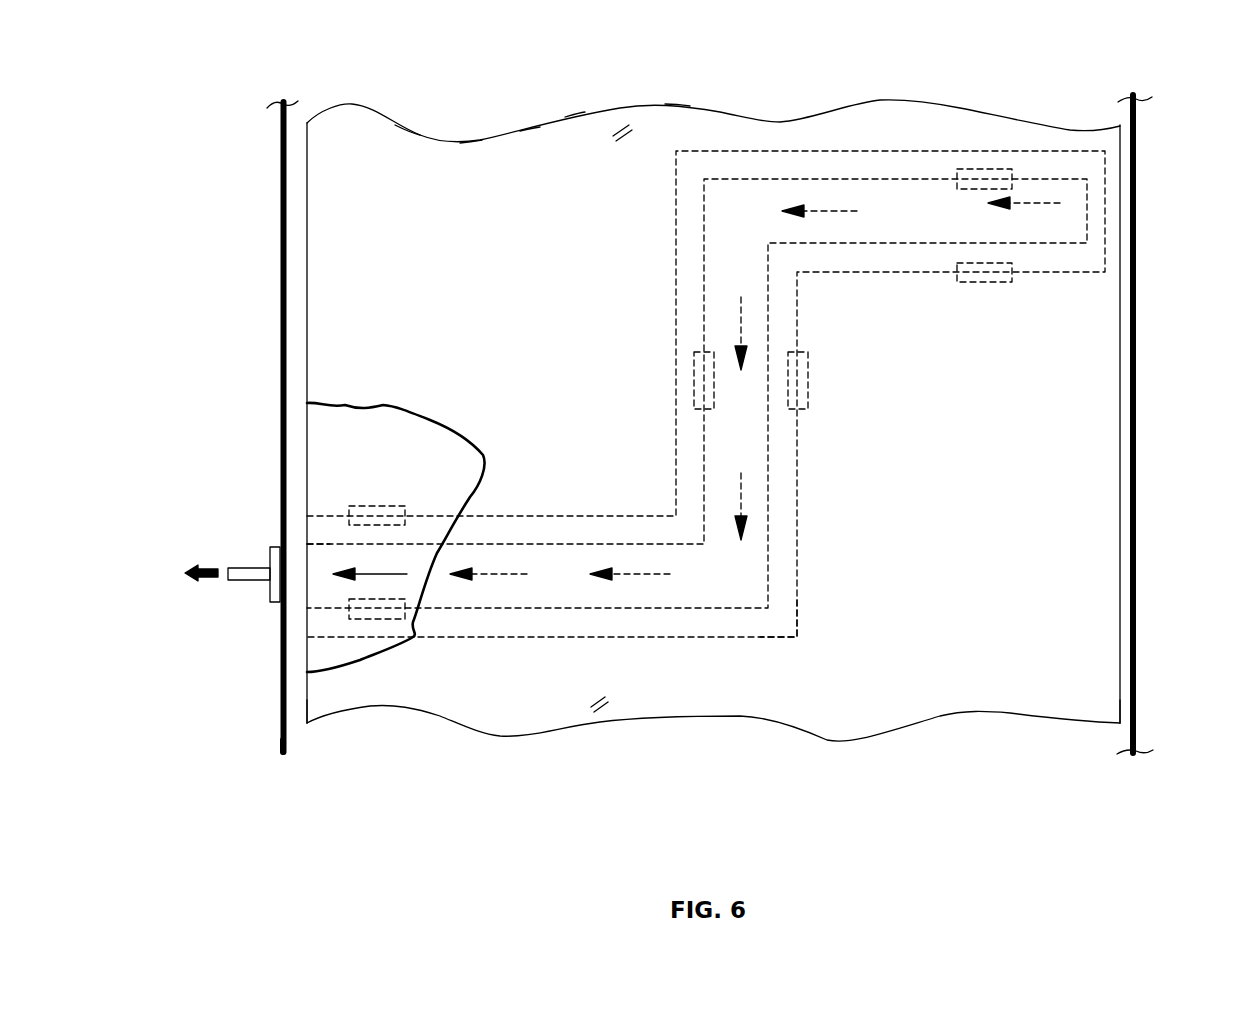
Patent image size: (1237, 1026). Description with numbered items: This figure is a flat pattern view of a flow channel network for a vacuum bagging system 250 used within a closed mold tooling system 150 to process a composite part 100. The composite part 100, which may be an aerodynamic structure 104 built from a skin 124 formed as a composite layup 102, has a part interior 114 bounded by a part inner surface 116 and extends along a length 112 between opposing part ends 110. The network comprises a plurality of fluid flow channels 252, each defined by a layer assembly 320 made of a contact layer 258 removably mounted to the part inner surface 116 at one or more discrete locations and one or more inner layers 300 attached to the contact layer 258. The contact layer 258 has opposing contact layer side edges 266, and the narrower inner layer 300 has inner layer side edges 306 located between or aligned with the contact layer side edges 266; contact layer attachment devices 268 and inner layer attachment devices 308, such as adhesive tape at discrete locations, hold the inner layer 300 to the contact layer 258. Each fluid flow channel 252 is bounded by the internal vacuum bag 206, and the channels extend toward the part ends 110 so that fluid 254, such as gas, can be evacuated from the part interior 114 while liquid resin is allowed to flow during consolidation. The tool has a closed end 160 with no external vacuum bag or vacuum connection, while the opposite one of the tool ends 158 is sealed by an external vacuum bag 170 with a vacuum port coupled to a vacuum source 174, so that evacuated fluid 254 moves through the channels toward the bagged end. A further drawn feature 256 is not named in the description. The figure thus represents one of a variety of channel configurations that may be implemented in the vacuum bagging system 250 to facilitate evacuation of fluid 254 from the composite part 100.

The composite part 100 is at (378, 107).
The composite layup 102 is at (415, 135).
The aerodynamic structure 104 is at (482, 140).
The part ends 110 is at (307, 120).
The length 112 is at (538, 128).
The part interior 114 is at (578, 135).
The part inner surface 116 is at (622, 130).
The skin 124 is at (680, 107).
The closed mold tooling system 150 is at (281, 185).
The tool ends 158 is at (312, 724).
The closed end 160 is at (1122, 193).
The external vacuum bag 170 is at (282, 748).
The vacuum source 174 is at (200, 567).
The internal vacuum bag 206 is at (603, 705).
The vacuum bagging system 250 is at (740, 718).
The fluid flow channel 252 is at (905, 228).
The fluid 254 is at (832, 210).
The passage outlet 256 is at (760, 640).
The contact layer 258 is at (317, 525).
The contact layer side edges 266 is at (890, 151).
The contact layer attachment devices 268 is at (1000, 283).
The inner layer 300 is at (322, 588).
The inner layer side edges 306 is at (928, 179).
The inner layer attachment devices 308 is at (992, 169).
The layer assembly 320 is at (323, 541).